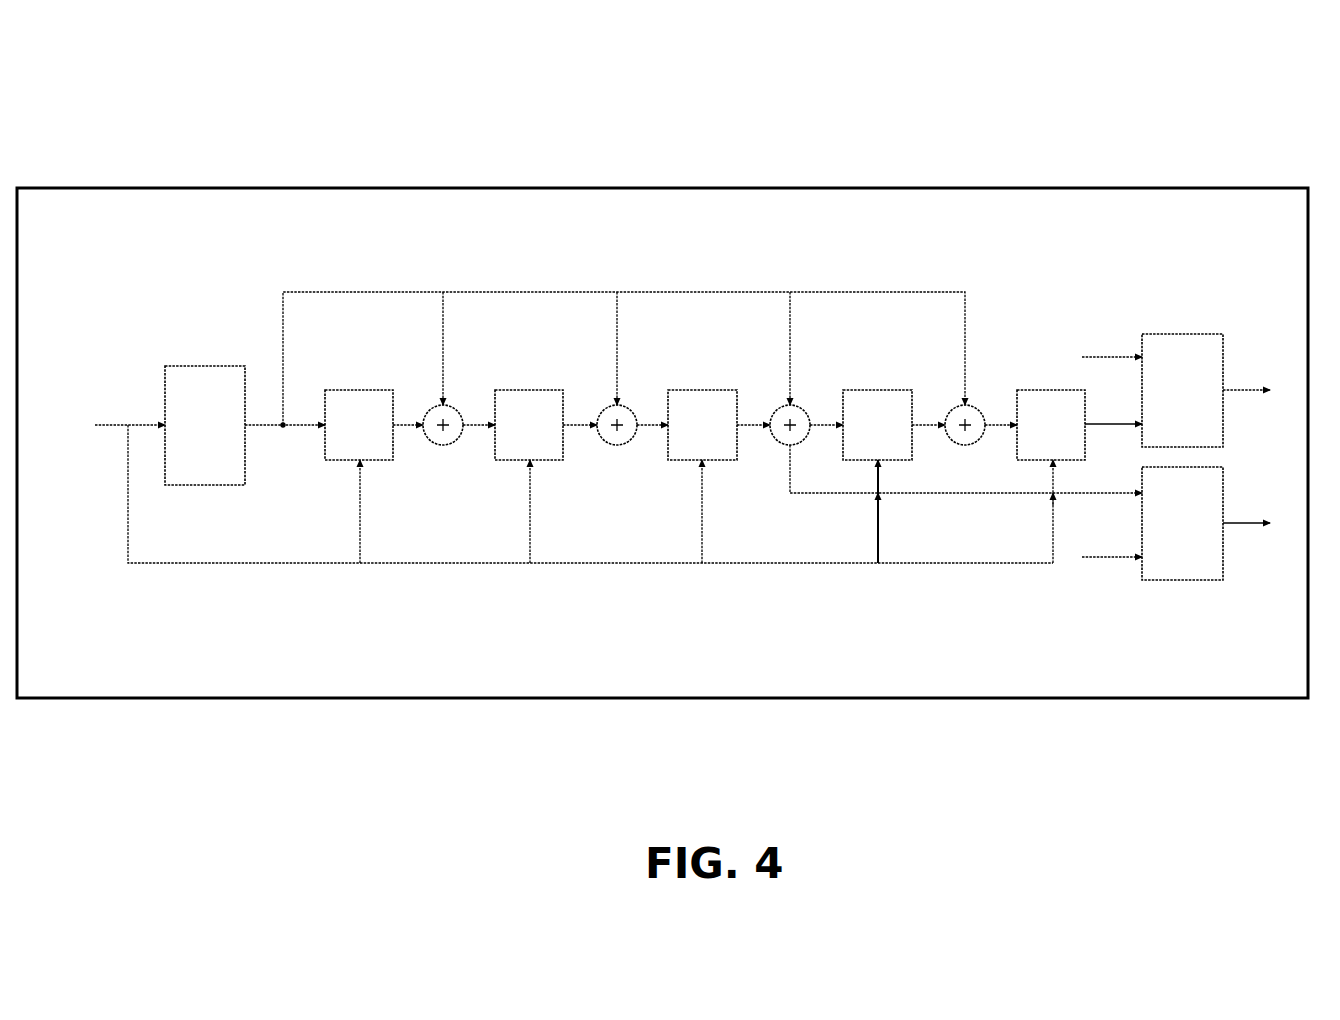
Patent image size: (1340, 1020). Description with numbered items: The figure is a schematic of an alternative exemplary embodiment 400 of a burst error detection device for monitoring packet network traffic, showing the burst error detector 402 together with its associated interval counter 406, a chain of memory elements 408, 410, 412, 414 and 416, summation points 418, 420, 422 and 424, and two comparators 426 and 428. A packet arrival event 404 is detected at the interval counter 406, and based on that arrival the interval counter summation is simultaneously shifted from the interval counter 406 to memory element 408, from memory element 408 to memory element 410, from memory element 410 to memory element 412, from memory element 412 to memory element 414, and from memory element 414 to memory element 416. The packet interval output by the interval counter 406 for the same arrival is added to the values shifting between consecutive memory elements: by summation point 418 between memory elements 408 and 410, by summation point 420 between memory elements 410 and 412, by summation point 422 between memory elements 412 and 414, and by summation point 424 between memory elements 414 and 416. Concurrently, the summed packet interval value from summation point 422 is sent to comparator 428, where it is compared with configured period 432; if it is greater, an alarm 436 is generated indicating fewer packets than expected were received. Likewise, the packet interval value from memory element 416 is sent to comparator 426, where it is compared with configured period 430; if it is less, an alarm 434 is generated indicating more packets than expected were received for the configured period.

The exemplary embodiment 400 is at (1244, 88).
The burst error detector 402 is at (907, 188).
The packet arrival event 404 is at (72, 402).
The interval counter 406 is at (195, 366).
The memory element 408 is at (352, 390).
The memory element 410 is at (508, 390).
The memory element 412 is at (723, 390).
The memory element 414 is at (853, 390).
The memory element 416 is at (1030, 390).
The summation point 418 is at (435, 447).
The summation point 420 is at (607, 444).
The summation point 422 is at (779, 444).
The summation point 424 is at (957, 445).
The comparator 426 is at (1198, 334).
The comparator 428 is at (1200, 580).
The configured period 430 is at (1107, 322).
The configured period 432 is at (1105, 557).
The alarm 434 is at (1250, 368).
The alarm 436 is at (1253, 523).